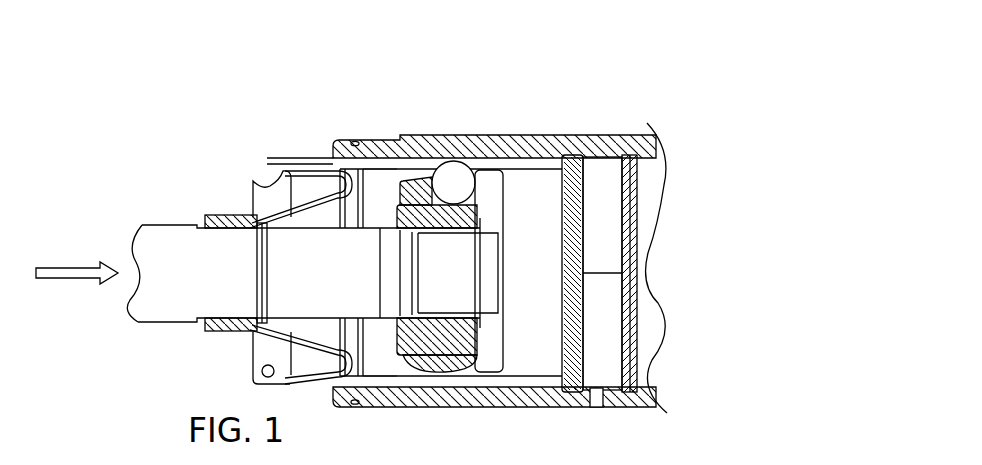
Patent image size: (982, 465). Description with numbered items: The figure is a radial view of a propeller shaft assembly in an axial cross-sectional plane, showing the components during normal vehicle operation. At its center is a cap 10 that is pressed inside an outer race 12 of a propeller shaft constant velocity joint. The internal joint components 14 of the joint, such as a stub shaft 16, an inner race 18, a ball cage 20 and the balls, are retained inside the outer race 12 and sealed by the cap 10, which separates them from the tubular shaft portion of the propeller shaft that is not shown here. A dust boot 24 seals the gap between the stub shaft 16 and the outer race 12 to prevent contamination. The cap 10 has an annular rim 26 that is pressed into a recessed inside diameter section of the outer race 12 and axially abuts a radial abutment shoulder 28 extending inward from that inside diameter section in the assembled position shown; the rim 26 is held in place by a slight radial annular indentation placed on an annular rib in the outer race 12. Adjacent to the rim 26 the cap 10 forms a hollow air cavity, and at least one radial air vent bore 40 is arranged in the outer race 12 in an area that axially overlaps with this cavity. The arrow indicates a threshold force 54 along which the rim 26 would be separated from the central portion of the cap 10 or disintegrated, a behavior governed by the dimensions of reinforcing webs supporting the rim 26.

The cap 10 is at (617, 182).
The outer race 12 is at (443, 150).
The internal joint components 14 is at (375, 188).
The stub shaft 16 is at (172, 230).
The inner race 18 is at (420, 215).
The ball cage 20 is at (426, 182).
The dust boot 24 is at (257, 218).
The annular rim 26 is at (577, 160).
The radial abutment shoulder 28 is at (560, 158).
The radial air vent bore 40 is at (597, 407).
The threshold force 54 is at (67, 273).